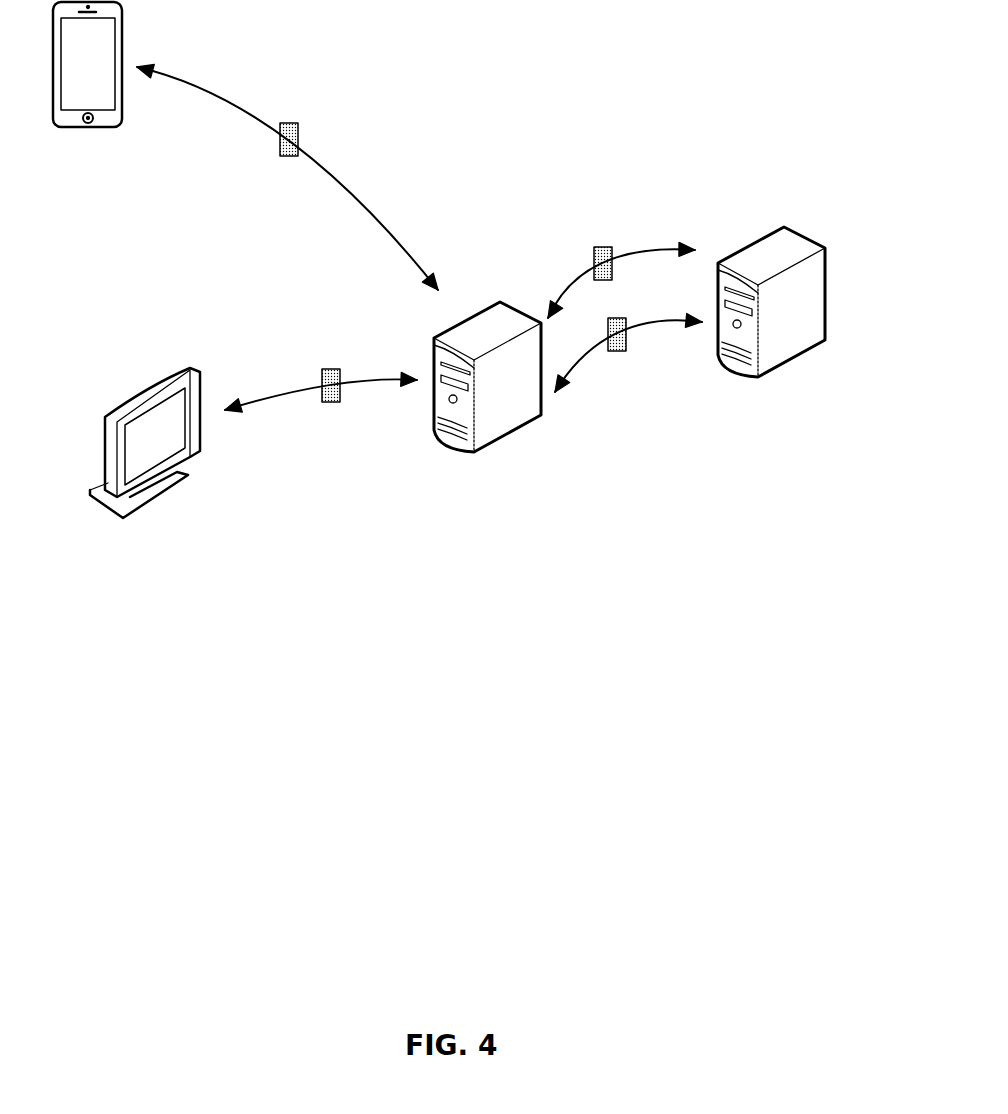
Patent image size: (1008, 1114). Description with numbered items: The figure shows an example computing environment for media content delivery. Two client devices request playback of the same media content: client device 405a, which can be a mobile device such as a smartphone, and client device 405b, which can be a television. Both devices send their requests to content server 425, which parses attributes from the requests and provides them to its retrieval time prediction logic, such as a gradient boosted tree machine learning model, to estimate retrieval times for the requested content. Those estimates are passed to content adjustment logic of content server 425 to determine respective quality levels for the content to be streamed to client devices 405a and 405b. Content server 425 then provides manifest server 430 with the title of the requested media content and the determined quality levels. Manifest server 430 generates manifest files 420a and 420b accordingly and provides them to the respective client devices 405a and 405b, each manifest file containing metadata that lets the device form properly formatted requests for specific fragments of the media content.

The client device 405a is at (88, 127).
The client device 405b is at (137, 397).
The manifest file 420a is at (290, 123).
The manifest file 420b is at (330, 369).
The content server 425 is at (483, 450).
The manifest server 430 is at (805, 238).